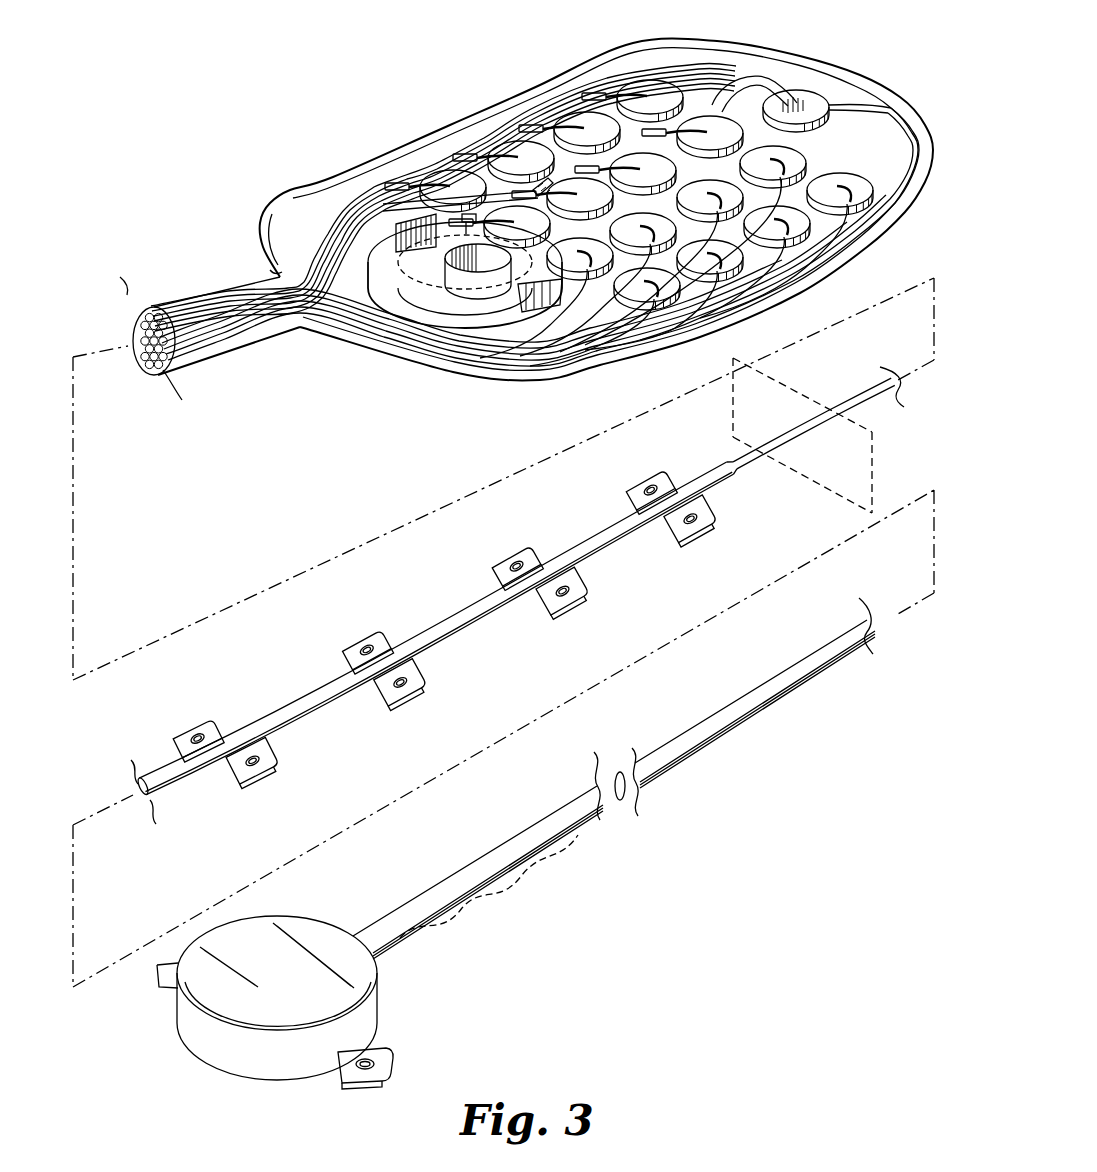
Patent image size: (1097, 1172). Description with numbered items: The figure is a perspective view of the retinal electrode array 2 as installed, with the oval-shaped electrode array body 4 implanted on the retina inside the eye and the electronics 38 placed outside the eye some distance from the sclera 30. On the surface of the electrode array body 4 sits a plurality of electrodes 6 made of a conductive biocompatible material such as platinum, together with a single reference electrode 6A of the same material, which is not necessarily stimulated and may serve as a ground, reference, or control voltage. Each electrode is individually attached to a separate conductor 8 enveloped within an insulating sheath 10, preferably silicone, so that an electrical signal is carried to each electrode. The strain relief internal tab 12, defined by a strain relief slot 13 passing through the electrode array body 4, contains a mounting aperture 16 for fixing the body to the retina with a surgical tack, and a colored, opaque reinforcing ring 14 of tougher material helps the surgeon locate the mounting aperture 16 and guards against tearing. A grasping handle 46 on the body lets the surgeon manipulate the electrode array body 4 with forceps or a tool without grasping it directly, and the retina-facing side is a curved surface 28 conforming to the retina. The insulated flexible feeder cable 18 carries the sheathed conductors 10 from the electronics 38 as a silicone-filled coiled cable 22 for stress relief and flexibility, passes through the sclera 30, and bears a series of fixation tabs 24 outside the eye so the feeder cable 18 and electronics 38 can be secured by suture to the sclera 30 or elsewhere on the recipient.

The retinal electrode array 2 is at (704, 870).
The electrode array body 4 is at (291, 192).
The electrodes 6 is at (427, 170).
The reference electrode 6A is at (816, 92).
The conductors 8 is at (633, 88).
The insulating sheath 10 is at (519, 103).
The strain relief internal tab 12 is at (387, 298).
The strain relief slot 13 is at (395, 264).
The reinforcing ring 14 is at (467, 232).
The mounting aperture 16 is at (450, 300).
The feeder cable 18 is at (211, 290).
The coiled cable 22 is at (347, 697).
The fixation tabs 24 is at (640, 490).
The curved surface 28 is at (540, 395).
The sclera 30 is at (874, 462).
The electronics 38 is at (380, 1002).
The grasping handle 46 is at (743, 77).